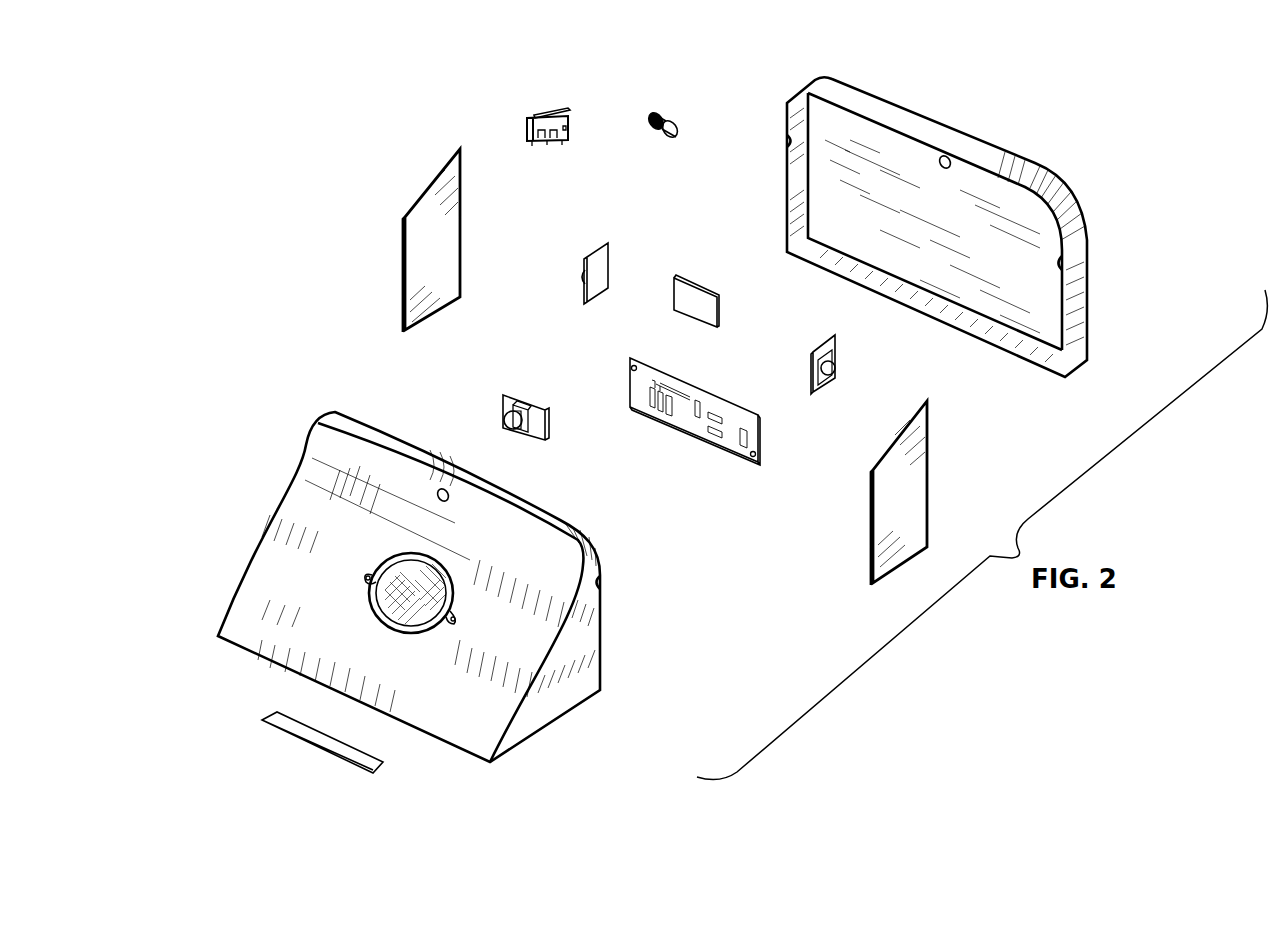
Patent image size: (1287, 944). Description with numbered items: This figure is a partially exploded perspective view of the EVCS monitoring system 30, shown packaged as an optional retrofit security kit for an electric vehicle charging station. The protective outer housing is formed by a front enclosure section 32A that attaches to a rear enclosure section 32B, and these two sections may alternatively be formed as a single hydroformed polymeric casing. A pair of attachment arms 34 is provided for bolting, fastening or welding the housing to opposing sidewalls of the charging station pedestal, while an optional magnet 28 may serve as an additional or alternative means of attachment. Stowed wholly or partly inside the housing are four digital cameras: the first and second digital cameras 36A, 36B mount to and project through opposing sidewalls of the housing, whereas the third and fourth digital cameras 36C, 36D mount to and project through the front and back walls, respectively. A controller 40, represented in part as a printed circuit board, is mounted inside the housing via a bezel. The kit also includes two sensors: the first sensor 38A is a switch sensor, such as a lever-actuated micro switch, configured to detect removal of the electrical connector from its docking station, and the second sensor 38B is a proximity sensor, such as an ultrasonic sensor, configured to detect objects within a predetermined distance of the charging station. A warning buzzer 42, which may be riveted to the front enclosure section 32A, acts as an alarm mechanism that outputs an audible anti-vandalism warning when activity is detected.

The EVCS monitoring system 30 is at (253, 123).
The front enclosure section 32A is at (601, 637).
The rear enclosure section 32B is at (1087, 283).
The attachment arm 34 is at (405, 237).
The first digital camera 36A is at (827, 393).
The second digital camera 36B is at (588, 260).
The third digital camera 36C is at (523, 398).
The fourth digital camera 36D is at (690, 283).
The first sensor 38A is at (536, 114).
The second sensor 38B is at (653, 112).
The controller 40 is at (730, 452).
The warning buzzer 42 is at (407, 587).
The magnet 28 is at (305, 748).